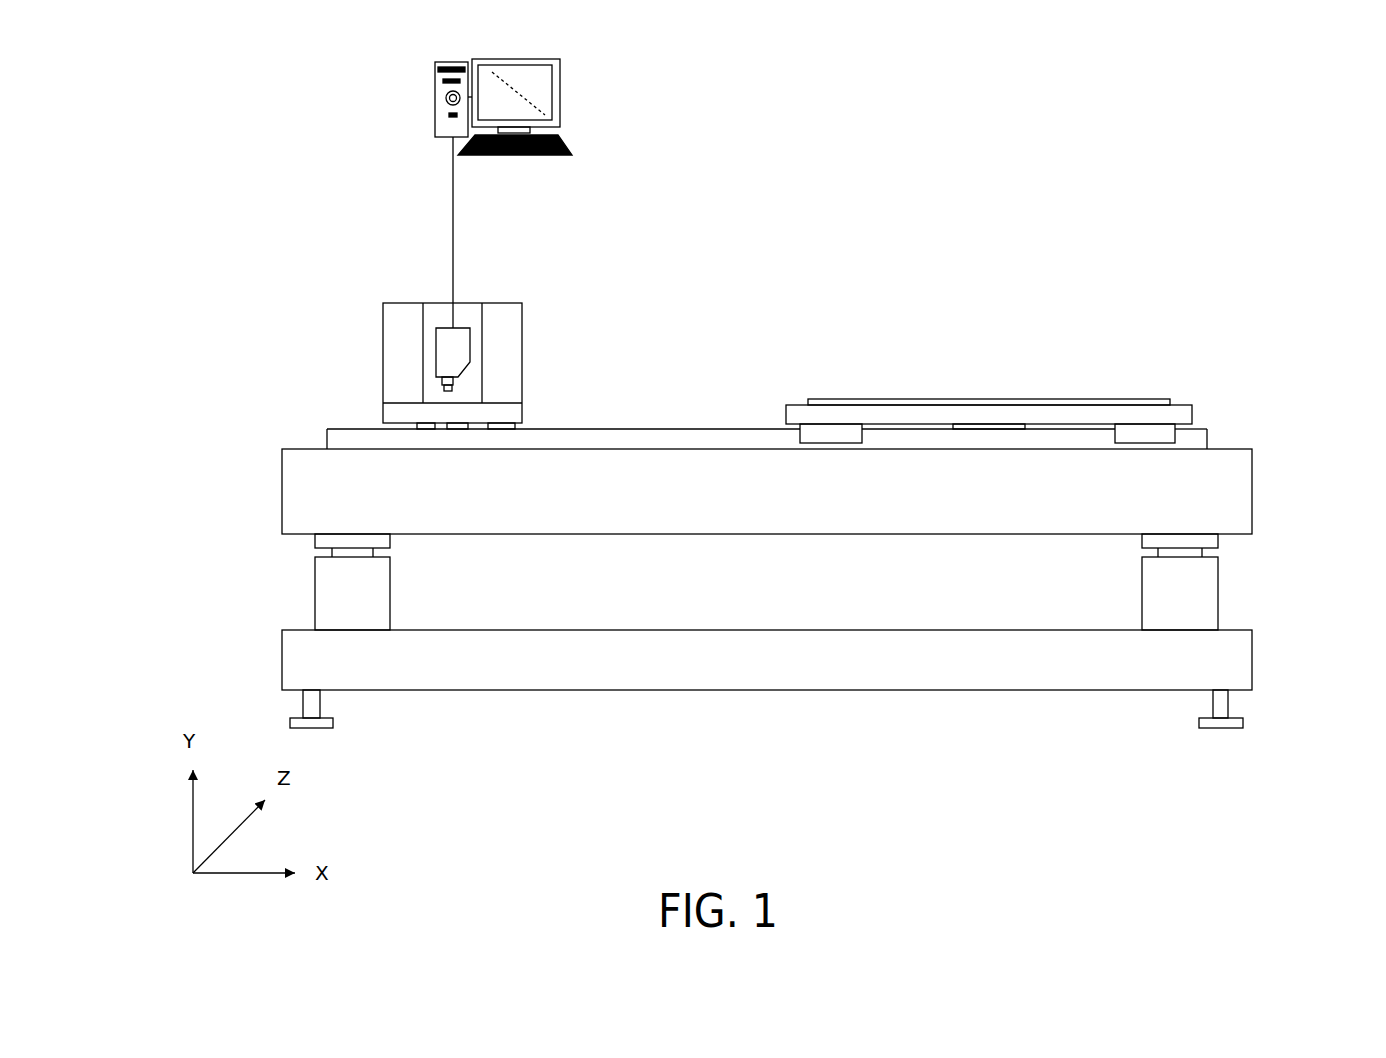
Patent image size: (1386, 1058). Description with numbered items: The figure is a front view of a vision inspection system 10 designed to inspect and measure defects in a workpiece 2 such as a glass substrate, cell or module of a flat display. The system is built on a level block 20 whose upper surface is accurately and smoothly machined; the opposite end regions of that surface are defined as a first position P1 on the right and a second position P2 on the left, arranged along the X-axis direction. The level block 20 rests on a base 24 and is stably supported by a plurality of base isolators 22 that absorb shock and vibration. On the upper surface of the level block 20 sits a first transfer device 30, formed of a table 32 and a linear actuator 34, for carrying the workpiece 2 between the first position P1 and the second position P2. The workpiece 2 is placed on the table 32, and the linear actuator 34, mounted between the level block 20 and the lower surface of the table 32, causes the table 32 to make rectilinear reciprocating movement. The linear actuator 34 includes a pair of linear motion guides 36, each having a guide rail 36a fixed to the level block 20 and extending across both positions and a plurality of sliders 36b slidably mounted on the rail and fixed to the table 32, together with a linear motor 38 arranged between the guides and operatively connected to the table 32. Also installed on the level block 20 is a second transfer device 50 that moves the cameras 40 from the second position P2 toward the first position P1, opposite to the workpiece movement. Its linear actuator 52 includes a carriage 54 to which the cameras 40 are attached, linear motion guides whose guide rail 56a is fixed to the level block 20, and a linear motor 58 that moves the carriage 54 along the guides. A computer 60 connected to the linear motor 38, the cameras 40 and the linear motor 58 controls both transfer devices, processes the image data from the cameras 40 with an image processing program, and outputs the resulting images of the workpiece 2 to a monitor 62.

The vision inspection system 10 is at (220, 334).
The second position P2 is at (285, 289).
The first position P1 is at (1180, 357).
The level block 20 is at (300, 490).
The base isolators 22 is at (330, 590).
The base 24 is at (300, 661).
The first transfer device 30 is at (1022, 358).
The table 32 is at (918, 416).
The workpiece 2 is at (972, 405).
The linear actuator 34 is at (716, 424).
The linear motion guides 36 is at (954, 358).
The guide rail 36a is at (753, 447).
The sliders 36b is at (830, 438).
The linear motor 38 is at (1000, 428).
The second transfer device 50 is at (446, 316).
The linear actuator 52 is at (511, 299).
The carriage 54 is at (397, 335).
The cameras 40 is at (447, 358).
The guide rail 56a is at (390, 426).
The linear motor 58 is at (452, 426).
The computer 60 is at (437, 93).
The monitor 62 is at (547, 93).